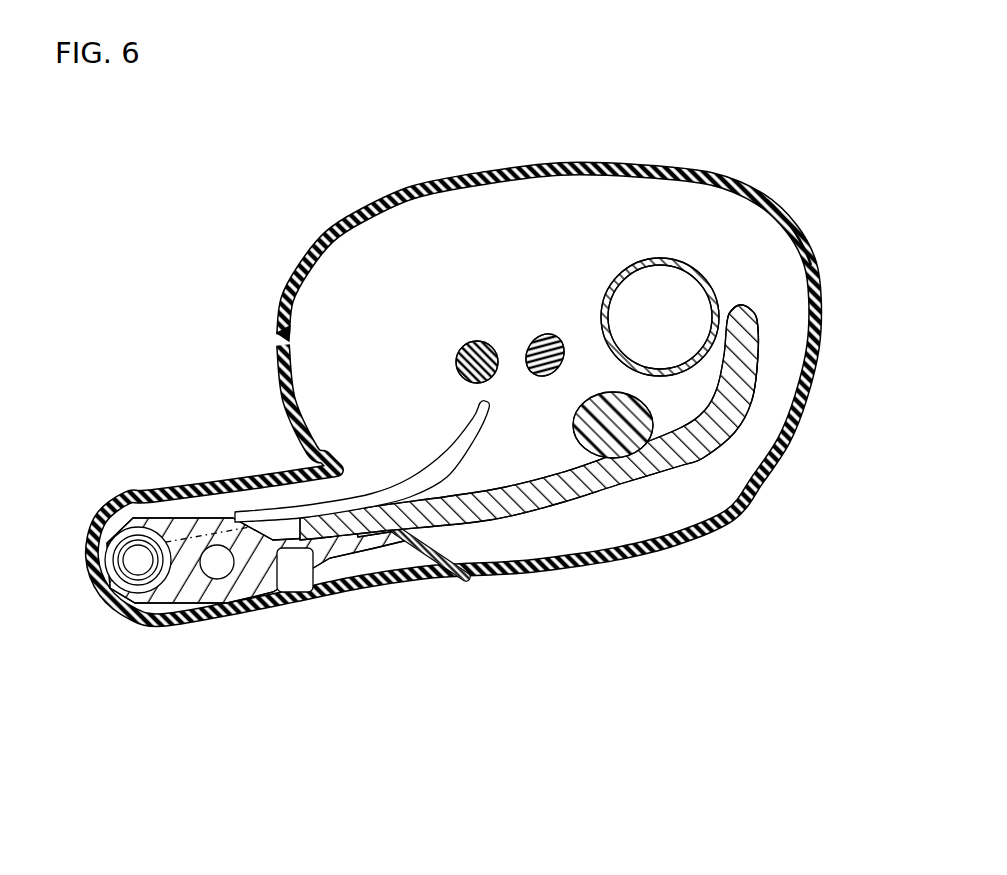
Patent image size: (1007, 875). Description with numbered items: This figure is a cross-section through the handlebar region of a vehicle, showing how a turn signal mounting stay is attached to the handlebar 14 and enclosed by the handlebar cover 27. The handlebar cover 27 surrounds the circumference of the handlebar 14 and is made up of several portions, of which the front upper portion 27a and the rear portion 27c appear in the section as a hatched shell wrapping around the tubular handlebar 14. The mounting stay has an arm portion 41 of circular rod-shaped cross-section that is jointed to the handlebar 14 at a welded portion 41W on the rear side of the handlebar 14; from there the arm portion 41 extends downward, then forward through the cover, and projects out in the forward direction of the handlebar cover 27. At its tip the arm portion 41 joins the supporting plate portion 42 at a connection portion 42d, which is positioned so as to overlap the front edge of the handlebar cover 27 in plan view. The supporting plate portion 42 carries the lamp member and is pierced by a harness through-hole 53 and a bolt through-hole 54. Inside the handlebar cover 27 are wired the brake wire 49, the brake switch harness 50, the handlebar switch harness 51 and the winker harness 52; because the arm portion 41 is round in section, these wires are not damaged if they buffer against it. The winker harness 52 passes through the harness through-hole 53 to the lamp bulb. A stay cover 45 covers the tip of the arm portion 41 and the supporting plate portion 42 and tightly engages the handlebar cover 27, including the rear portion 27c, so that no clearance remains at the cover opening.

The handlebar cover 27 is at (628, 158).
The front upper portion 27a is at (282, 403).
The rear portion 27c is at (512, 574).
The arm portion 41 is at (577, 495).
The welded portion 41W is at (722, 313).
The supporting plate portion 42 is at (237, 592).
The connection portion 42d is at (322, 592).
The stay cover 45 is at (207, 634).
The brake wire 49 is at (477, 341).
The brake switch harness 50 is at (543, 334).
The handlebar switch harness 51 is at (627, 442).
The winker harness 52 is at (373, 505).
The harness through-hole 53 is at (138, 602).
The bolt through-hole 54 is at (215, 579).
The handlebar 14 is at (680, 367).